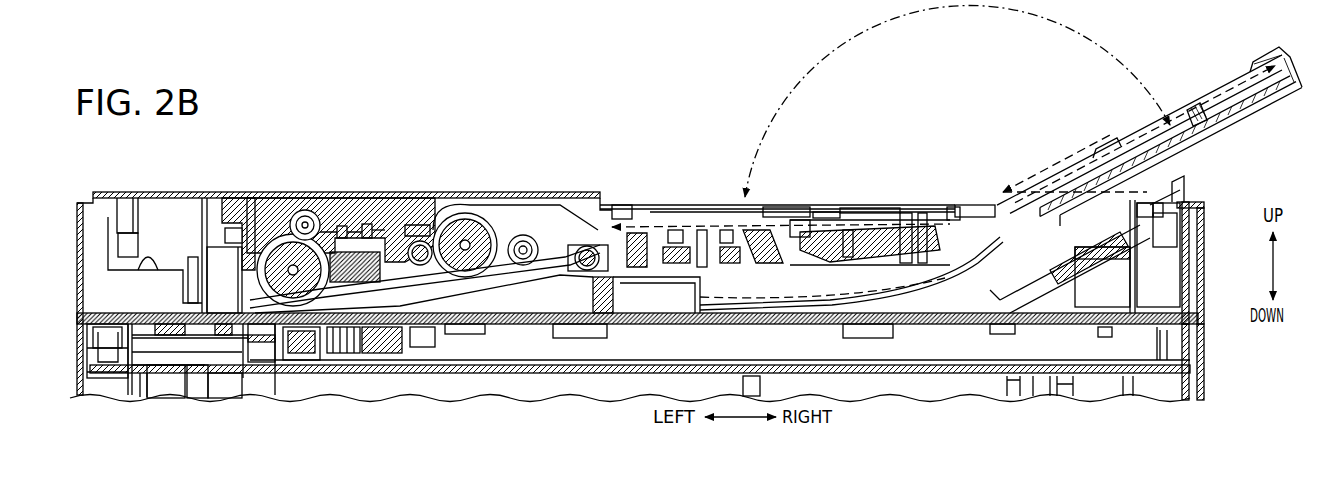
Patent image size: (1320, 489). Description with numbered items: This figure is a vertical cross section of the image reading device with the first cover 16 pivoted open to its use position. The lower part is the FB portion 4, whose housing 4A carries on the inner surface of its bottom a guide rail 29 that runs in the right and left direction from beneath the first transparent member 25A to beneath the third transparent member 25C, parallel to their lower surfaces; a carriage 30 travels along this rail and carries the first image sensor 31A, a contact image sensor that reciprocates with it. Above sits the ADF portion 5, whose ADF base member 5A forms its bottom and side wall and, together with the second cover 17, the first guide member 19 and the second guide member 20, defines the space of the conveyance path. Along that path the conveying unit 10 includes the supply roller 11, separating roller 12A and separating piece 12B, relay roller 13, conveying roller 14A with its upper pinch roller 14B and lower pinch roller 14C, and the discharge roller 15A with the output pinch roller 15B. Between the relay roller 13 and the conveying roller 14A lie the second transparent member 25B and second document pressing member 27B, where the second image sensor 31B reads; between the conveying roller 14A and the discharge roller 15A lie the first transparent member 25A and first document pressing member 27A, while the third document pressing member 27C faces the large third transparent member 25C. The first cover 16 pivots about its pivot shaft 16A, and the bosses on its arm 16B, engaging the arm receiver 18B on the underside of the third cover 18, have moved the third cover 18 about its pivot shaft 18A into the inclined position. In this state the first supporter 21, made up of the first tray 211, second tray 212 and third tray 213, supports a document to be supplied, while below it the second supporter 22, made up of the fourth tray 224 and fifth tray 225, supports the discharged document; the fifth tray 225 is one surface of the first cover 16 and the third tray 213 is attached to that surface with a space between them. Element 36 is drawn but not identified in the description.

The FB portion 4 is at (1204, 308).
The housing 4A is at (1204, 355).
The ADF portion 5 is at (1204, 197).
The ADF base member 5A is at (1204, 240).
The conveying unit 10 is at (468, 183).
The supply roller 11 is at (528, 235).
The separating roller 12A is at (468, 213).
The separating piece 12B is at (470, 334).
The relay roller 13 is at (426, 240).
The conveying roller 14A is at (283, 238).
The upper pinch roller 14B is at (304, 210).
The lower pinch roller 14C is at (240, 296).
The discharge roller 15A is at (580, 246).
The output pinch roller 15B is at (636, 275).
The first cover 16 is at (1230, 135).
The pivot shaft 16A is at (976, 205).
The arm 16B is at (915, 240).
The second cover 17 is at (143, 191).
The third cover 18 is at (1182, 174).
The pivot shaft 18A is at (1191, 255).
The arm receiver 18B is at (1060, 290).
The first guide member 19 is at (628, 330).
The second guide member 20 is at (572, 325).
The first supporter 21 is at (883, 235).
The second supporter 22 is at (947, 272).
The first transparent member 25A is at (350, 353).
The second transparent member 25B is at (342, 226).
The third transparent member 25C is at (1003, 334).
The first document pressing member 27A is at (385, 353).
The second document pressing member 27B is at (368, 224).
The third document pressing member 27C is at (948, 330).
The guide rail 29 is at (522, 338).
The carriage 30 is at (262, 362).
The first image sensor 31A is at (305, 360).
The second image sensor 31B is at (428, 218).
The sheet table 36 is at (698, 204).
The first tray 211 is at (778, 228).
The second tray 212 is at (857, 245).
The third tray 213 is at (1097, 152).
The fourth tray 224 is at (836, 224).
The fifth tray 225 is at (1072, 205).